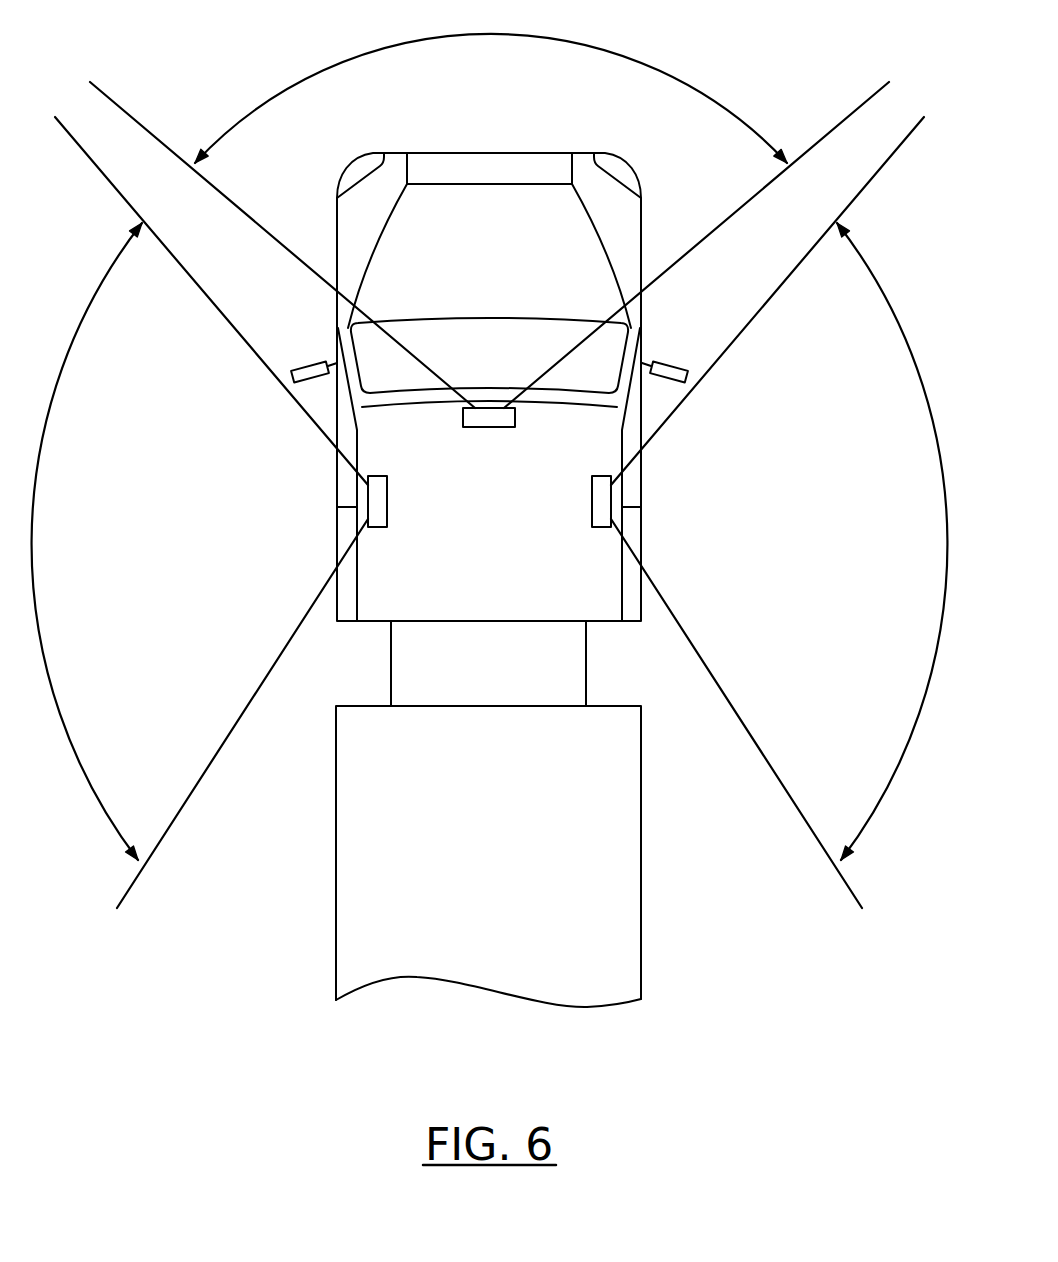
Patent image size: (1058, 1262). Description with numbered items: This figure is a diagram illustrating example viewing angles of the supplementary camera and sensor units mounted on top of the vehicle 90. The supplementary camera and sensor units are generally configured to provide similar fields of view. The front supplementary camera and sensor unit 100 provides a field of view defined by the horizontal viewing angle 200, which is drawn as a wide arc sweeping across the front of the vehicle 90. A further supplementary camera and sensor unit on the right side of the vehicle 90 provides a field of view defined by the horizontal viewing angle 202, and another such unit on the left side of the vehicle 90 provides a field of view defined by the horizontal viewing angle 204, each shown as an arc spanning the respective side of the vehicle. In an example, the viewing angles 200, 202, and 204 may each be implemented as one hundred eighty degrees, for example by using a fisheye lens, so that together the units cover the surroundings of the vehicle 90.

The vehicle 90 is at (467, 153).
The supplementary camera and sensor unit 100 is at (465, 431).
The horizontal viewing angle 200 is at (388, 47).
The horizontal viewing angle 202 is at (939, 640).
The horizontal viewing angle 204 is at (40, 638).